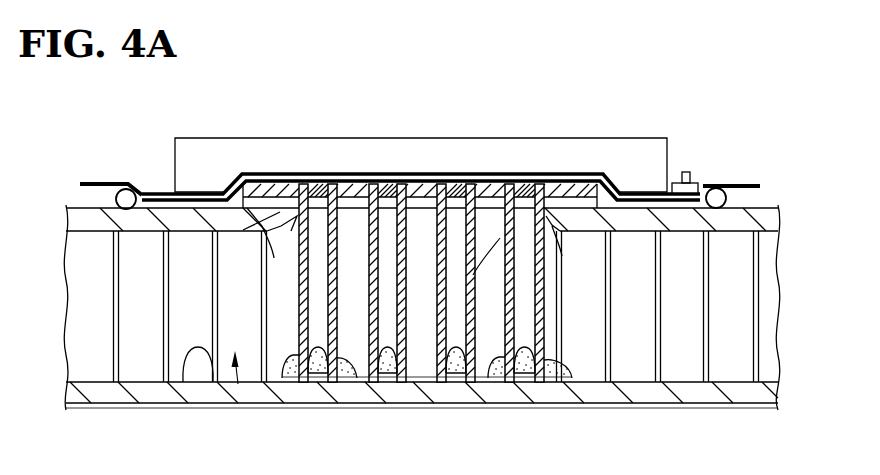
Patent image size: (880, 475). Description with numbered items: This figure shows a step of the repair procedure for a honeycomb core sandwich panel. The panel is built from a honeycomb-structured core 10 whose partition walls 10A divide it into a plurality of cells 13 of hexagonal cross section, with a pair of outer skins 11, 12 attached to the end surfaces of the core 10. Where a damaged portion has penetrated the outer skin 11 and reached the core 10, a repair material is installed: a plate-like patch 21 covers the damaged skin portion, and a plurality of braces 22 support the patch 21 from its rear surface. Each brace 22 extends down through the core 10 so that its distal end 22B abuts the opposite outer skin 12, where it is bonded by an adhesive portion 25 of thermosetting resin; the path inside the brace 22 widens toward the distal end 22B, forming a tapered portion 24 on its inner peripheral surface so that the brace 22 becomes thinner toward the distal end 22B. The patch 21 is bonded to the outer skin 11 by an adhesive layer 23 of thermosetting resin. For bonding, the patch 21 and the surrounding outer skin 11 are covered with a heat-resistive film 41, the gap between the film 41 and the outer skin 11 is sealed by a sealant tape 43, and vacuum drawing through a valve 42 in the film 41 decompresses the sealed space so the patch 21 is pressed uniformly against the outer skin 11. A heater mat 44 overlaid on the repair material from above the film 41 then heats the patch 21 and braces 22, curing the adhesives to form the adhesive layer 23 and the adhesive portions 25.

The core 10 is at (760, 294).
The partition walls 10A is at (191, 366).
The outer skin 11 is at (77, 200).
The outer skin 12 is at (697, 404).
The cells 13 is at (238, 384).
The patch 21 is at (268, 180).
The brace 22 is at (337, 328).
The distal end 22B is at (280, 368).
The adhesive layer 23 is at (223, 190).
The tapered portion 24 is at (533, 378).
The adhesive portion 25 is at (437, 309).
The heat-resistive film 41 is at (748, 185).
The valve 42 is at (686, 172).
The sealant tape 43 is at (712, 188).
The heater mat 44 is at (608, 138).